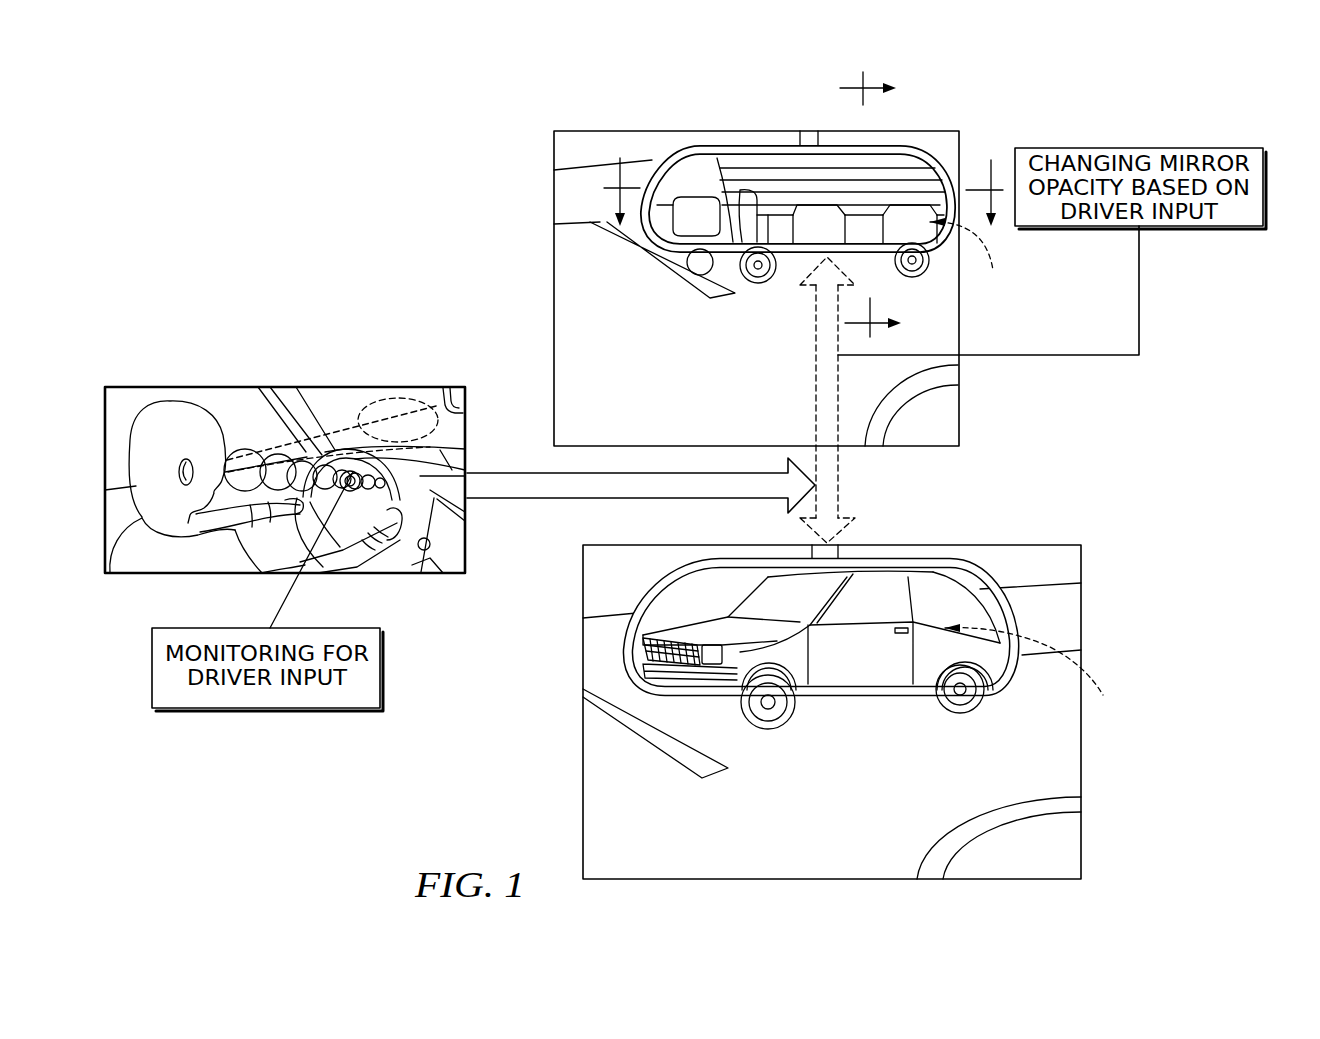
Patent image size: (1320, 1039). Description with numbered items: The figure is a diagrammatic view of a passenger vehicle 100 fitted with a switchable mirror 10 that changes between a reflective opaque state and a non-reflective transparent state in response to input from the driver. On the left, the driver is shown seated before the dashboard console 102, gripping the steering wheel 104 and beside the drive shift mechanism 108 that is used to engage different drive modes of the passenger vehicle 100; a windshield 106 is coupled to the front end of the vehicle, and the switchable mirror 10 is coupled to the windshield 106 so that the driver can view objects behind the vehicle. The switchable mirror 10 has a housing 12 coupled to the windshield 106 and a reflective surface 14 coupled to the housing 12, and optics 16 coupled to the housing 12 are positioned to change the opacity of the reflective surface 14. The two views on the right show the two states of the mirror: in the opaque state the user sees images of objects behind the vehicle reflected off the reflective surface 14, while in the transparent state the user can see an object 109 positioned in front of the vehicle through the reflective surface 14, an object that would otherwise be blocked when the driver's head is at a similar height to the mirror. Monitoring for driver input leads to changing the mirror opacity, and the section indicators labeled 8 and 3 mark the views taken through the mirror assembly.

The passenger vehicle 100 is at (143, 345).
The switchable mirror 10 is at (471, 381).
The housing 12 is at (440, 393).
The reflective surface 14 is at (462, 395).
The optics 16 is at (1032, 471).
The dashboard console 102 is at (451, 469).
The steering wheel 104 is at (430, 500).
The windshield 106 is at (330, 398).
The drive shift mechanism 108 is at (433, 580).
The object 109 is at (711, 288).
The section view indicator FIG. 8 is at (803, 179).
The section view indicator FIG. 3 is at (879, 206).